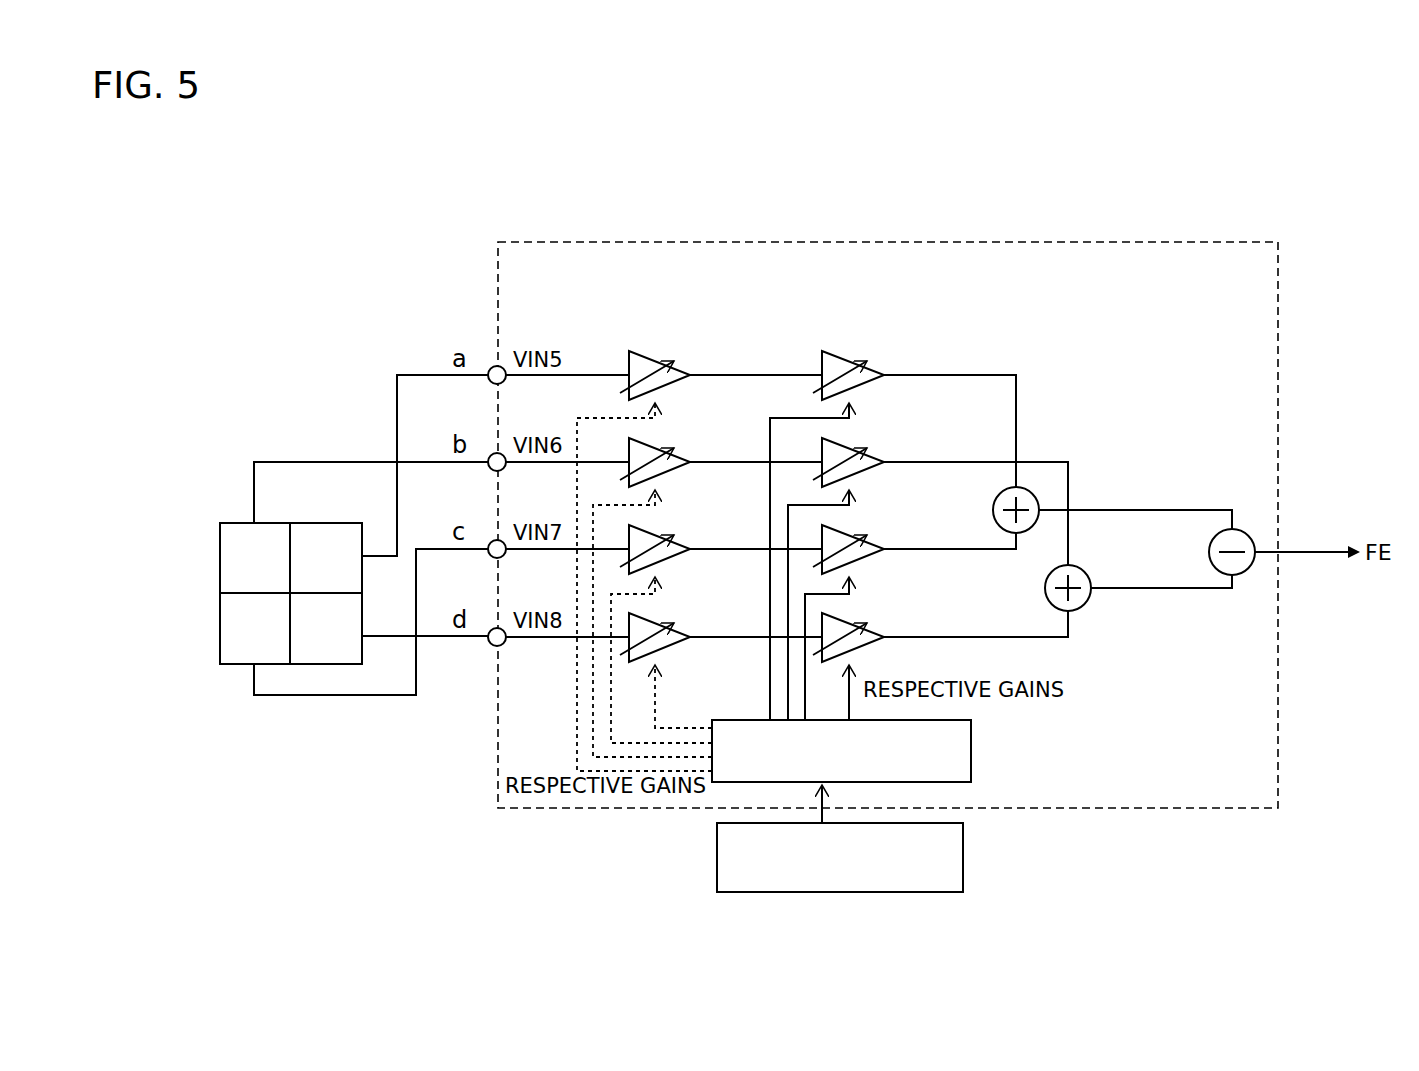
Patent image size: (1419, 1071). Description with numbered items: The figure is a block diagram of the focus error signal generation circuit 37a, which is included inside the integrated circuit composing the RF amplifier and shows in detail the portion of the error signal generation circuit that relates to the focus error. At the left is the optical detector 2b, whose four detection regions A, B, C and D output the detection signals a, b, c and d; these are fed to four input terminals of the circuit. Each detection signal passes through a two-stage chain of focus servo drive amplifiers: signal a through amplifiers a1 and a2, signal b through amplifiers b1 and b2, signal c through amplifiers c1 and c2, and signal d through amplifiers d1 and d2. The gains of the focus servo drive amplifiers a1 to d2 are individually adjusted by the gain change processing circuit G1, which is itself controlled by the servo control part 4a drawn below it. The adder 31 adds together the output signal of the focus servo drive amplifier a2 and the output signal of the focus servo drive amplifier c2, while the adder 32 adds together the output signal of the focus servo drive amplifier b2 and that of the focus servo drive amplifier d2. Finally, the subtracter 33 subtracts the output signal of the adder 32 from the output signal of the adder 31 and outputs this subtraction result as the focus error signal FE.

The focus error signal generation circuit 37a is at (1028, 242).
The optical detector 2b is at (219, 632).
The adder 31 is at (997, 500).
The adder 32 is at (1086, 601).
The subtracter 33 is at (1245, 530).
The gain change processing circuit G1 is at (971, 750).
The servo control part 4a is at (963, 848).
The focus servo drive amplifier a1 is at (645, 355).
The focus servo drive amplifier b1 is at (645, 442).
The focus servo drive amplifier c1 is at (645, 529).
The focus servo drive amplifier d1 is at (645, 617).
The focus servo drive amplifier a2 is at (839, 355).
The focus servo drive amplifier b2 is at (839, 442).
The focus servo drive amplifier c2 is at (839, 529).
The focus servo drive amplifier d2 is at (839, 617).